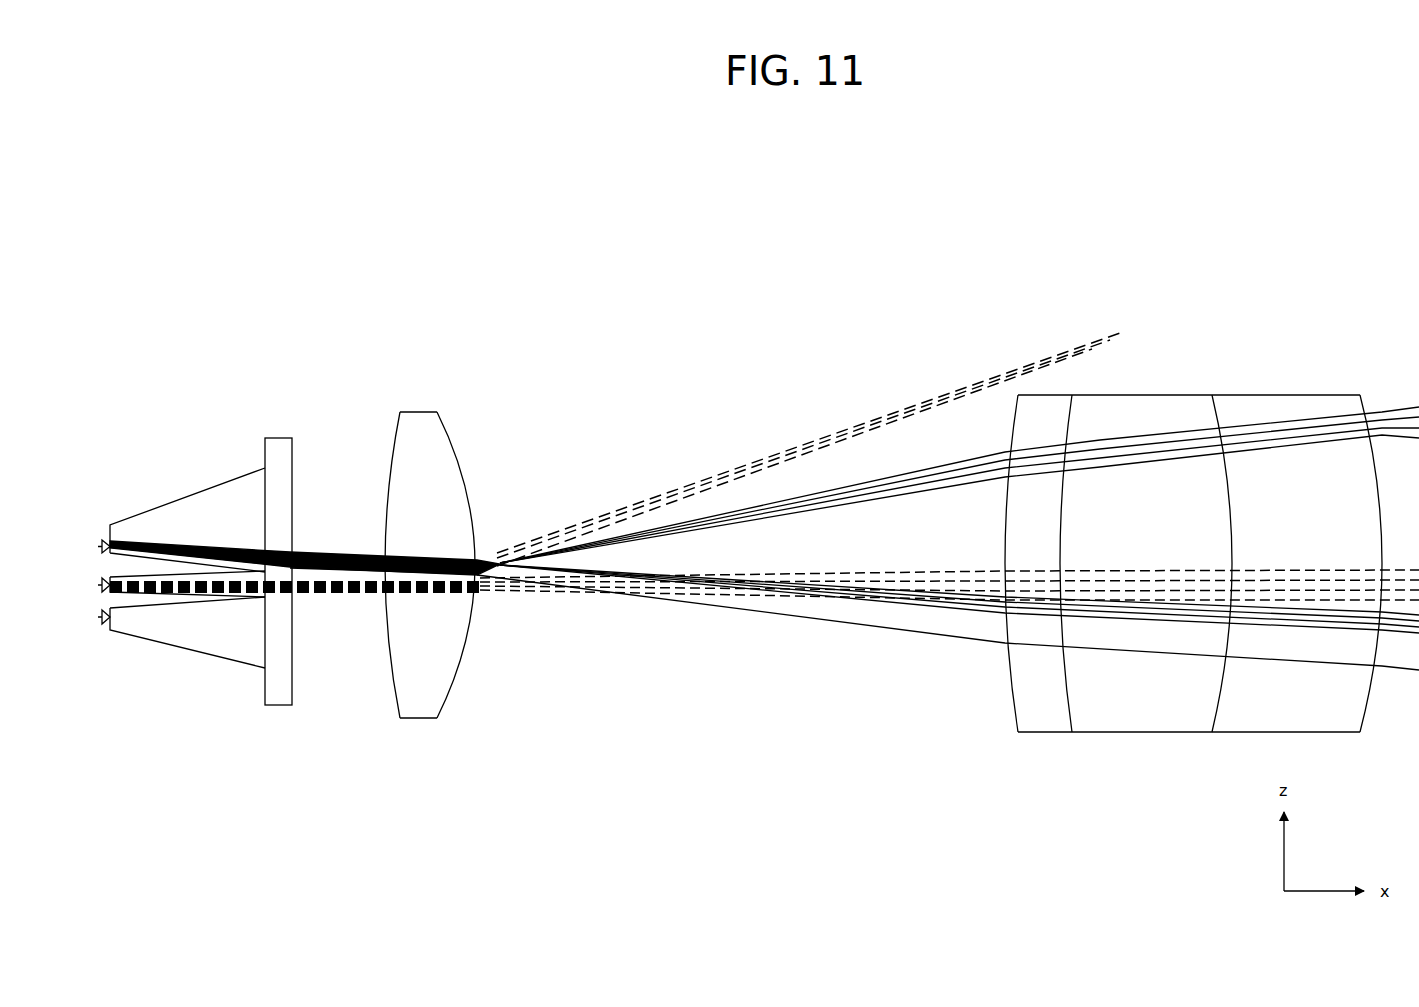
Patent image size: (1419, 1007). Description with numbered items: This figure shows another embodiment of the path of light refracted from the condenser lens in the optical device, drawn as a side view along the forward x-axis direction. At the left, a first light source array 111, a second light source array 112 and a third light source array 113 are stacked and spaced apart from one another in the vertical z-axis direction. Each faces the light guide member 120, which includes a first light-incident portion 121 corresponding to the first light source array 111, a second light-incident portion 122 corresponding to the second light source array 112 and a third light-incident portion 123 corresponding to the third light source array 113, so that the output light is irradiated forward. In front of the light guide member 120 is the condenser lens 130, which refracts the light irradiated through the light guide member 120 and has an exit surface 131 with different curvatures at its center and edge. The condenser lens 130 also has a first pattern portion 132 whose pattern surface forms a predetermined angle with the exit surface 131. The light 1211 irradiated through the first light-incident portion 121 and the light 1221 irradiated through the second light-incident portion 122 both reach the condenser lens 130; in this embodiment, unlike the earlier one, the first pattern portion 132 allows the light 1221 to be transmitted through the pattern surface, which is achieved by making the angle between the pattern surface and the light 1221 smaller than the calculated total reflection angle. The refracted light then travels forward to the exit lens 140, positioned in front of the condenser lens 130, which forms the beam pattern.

The first light source array 111 is at (98, 546).
The second light source array 112 is at (98, 585).
The third light source array 113 is at (98, 617).
The light guide member 120 is at (203, 468).
The first light-incident portion 121 is at (150, 522).
The second light-incident portion 122 is at (148, 593).
The third light-incident portion 123 is at (195, 638).
The condenser lens 130 is at (450, 517).
The exit surface 131 is at (465, 447).
The first pattern portion 132 is at (481, 560).
The light irradiated through the first light-incident portion 1211 is at (340, 548).
The light irradiated through the second light-incident portion 1221 is at (340, 594).
The exit lens 140 is at (1248, 363).